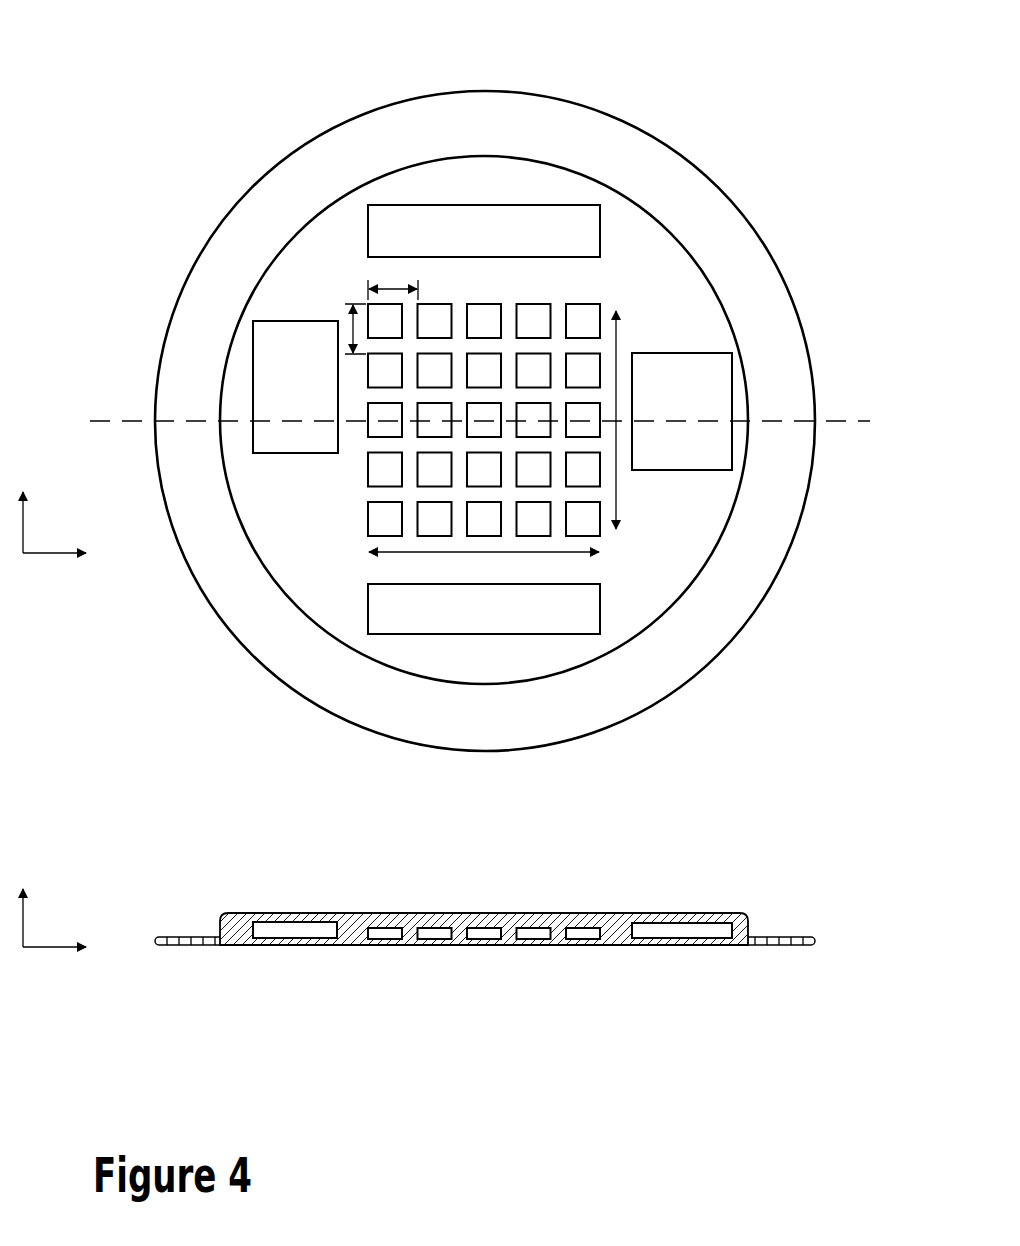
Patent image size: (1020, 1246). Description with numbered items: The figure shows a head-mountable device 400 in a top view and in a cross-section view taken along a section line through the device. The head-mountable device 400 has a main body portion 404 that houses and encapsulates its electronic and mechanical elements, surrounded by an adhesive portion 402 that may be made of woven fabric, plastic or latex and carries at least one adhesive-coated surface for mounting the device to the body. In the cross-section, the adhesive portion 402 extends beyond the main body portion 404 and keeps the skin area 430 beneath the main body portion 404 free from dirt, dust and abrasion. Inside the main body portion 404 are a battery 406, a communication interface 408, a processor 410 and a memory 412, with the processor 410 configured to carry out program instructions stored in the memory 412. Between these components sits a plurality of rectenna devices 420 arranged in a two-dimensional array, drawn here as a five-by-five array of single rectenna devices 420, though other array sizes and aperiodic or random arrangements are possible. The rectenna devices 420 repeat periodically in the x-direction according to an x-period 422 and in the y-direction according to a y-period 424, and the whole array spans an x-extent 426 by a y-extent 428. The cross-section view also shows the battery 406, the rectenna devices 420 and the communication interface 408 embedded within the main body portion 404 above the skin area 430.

The head-mountable device 400 is at (796, 96).
The adhesive portion 402 is at (583, 105).
The main body portion 404 is at (653, 217).
The battery 406 is at (265, 920).
The communication interface 408 is at (658, 918).
The processor 410 is at (484, 231).
The memory 412 is at (484, 609).
The rectenna devices 420 is at (380, 930).
The x-period 422 is at (412, 291).
The y-period 424 is at (350, 326).
The x-extent 426 is at (575, 552).
The y-extent 428 is at (616, 328).
The skin area 430 is at (618, 947).